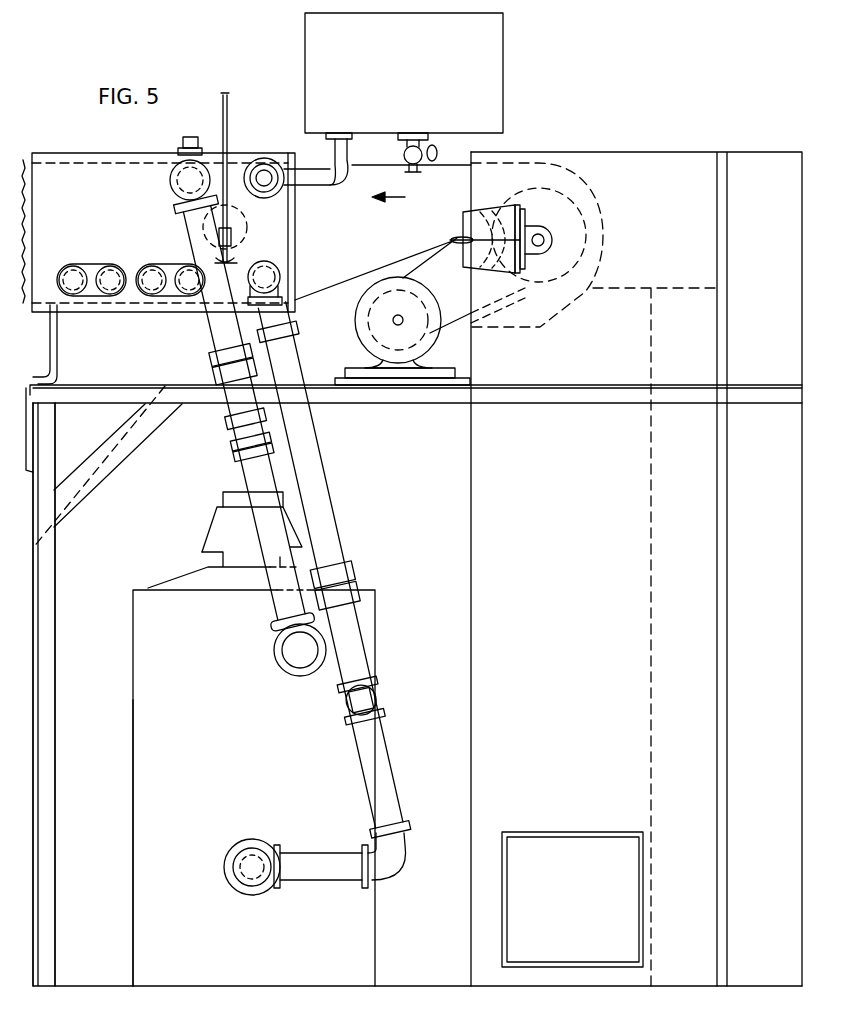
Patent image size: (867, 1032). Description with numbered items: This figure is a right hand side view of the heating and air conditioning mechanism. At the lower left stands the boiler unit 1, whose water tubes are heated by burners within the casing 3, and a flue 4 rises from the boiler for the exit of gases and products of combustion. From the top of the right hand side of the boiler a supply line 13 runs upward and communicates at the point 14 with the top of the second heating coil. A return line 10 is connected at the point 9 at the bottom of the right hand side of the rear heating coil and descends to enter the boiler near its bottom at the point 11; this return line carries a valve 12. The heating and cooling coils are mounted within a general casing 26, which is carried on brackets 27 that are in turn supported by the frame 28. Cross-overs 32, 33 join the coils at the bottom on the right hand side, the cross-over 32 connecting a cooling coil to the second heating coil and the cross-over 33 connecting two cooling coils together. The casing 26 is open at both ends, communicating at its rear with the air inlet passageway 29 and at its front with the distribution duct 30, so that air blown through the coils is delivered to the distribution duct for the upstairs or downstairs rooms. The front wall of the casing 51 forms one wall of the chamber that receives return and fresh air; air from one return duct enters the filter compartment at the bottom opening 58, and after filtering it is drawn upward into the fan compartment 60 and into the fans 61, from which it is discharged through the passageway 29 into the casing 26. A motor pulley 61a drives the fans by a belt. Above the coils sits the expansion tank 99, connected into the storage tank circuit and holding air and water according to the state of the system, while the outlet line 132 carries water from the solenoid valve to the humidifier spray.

The boiler unit 1 is at (133, 657).
The casing 3 is at (148, 705).
The flue 4 is at (210, 516).
The point at bottom of rear heating coil 9 is at (266, 265).
The return line 10 is at (313, 489).
The boiler return entry point 11 is at (244, 887).
The valve 12 is at (344, 701).
The supply line 13 is at (250, 468).
The connection point at top of second heating coil 14 is at (183, 180).
The general casing 26 is at (58, 163).
The brackets 27 is at (57, 346).
The frame 28 is at (50, 576).
The air inlet passageway 29 is at (345, 277).
The distribution duct 30 is at (28, 216).
The cross-over 32 is at (165, 265).
The cross-over 33 is at (88, 265).
The front wall of the casing 51 is at (470, 552).
The air inlet at bottom of filter compartment 58 is at (568, 845).
The fan compartment 60 is at (665, 160).
The fans 61 is at (592, 197).
The motor pulley 61a is at (360, 337).
The expansion tank 99 is at (503, 108).
The outlet line 132 is at (228, 120).